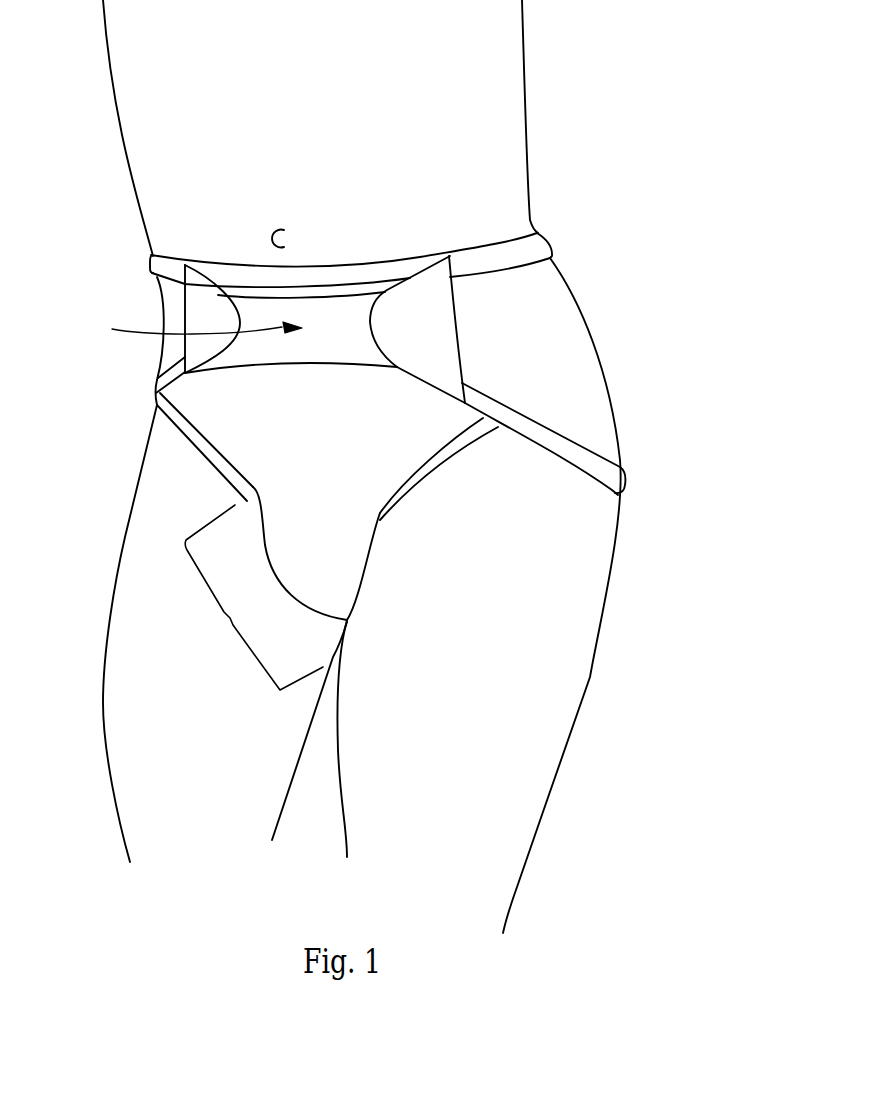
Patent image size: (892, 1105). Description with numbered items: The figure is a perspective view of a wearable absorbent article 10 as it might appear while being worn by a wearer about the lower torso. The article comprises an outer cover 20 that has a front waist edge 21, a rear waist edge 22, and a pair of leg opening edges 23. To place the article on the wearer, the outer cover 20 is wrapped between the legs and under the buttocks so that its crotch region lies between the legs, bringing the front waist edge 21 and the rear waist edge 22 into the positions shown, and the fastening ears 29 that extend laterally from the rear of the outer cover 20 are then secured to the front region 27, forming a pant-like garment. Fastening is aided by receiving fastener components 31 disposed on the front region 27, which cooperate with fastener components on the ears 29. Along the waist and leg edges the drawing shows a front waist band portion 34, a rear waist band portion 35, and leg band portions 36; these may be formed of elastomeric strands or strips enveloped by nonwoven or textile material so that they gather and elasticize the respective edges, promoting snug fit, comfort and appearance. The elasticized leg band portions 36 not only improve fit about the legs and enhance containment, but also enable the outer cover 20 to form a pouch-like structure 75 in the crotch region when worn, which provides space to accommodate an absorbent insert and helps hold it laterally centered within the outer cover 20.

The wearable absorbent article 10 is at (640, 306).
The outer cover 20 is at (578, 381).
The front waist edge 21 is at (355, 262).
The rear waist edge 22 is at (540, 232).
The leg opening edges 23 is at (190, 441).
The front region 27 is at (190, 328).
The fastening ears 29 is at (203, 265).
The receiving fastener components 31 is at (257, 312).
The front waist band portion 34 is at (318, 277).
The rear waist band portion 35 is at (537, 248).
The leg band portions 36 is at (217, 452).
The pouch-like structure 75 is at (252, 597).